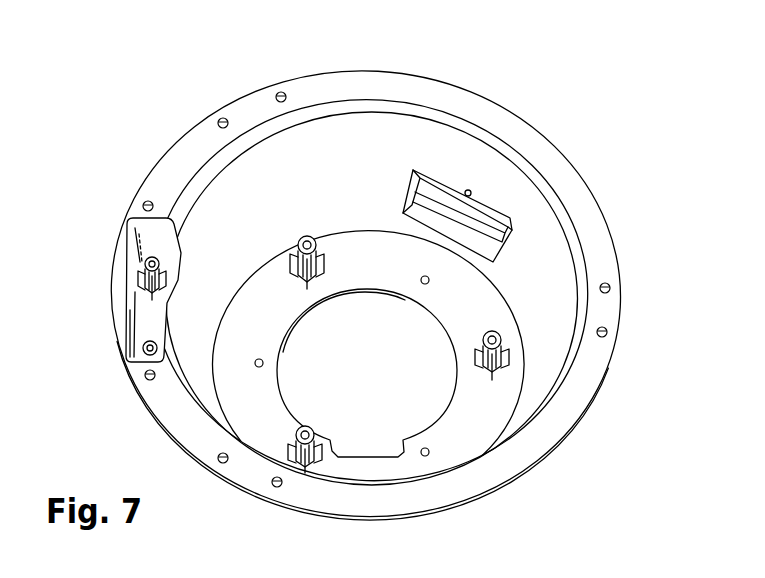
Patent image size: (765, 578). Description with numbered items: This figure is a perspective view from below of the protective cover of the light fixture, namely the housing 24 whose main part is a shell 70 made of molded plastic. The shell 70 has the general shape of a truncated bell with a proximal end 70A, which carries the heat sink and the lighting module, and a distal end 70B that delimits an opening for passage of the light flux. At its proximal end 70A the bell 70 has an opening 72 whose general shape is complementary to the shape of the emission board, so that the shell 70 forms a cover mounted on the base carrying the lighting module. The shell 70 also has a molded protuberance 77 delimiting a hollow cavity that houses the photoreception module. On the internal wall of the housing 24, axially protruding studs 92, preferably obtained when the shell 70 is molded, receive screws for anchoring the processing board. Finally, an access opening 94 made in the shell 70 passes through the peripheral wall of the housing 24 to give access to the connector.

The housing 24 is at (372, 273).
The shell 70 is at (366, 273).
The proximal end 70A is at (455, 438).
The distal end 70B is at (437, 94).
The opening 72 is at (452, 395).
The protuberance 77 is at (140, 305).
The studs 92 is at (308, 237).
The access opening 94 is at (512, 243).